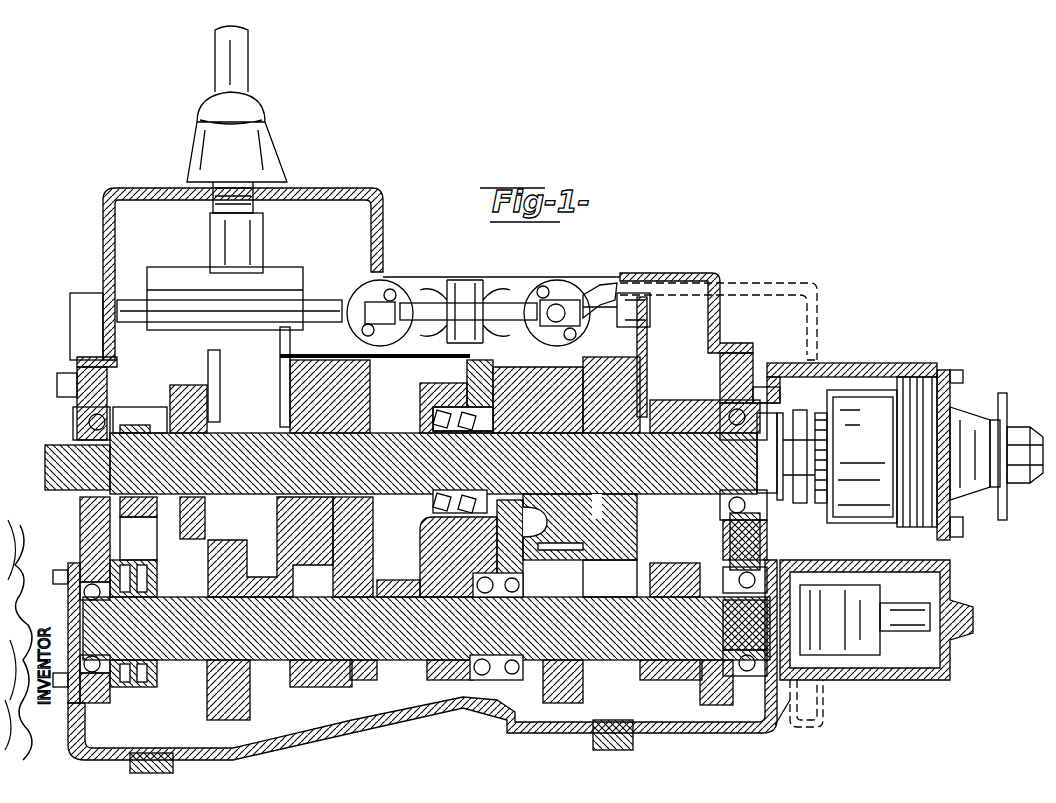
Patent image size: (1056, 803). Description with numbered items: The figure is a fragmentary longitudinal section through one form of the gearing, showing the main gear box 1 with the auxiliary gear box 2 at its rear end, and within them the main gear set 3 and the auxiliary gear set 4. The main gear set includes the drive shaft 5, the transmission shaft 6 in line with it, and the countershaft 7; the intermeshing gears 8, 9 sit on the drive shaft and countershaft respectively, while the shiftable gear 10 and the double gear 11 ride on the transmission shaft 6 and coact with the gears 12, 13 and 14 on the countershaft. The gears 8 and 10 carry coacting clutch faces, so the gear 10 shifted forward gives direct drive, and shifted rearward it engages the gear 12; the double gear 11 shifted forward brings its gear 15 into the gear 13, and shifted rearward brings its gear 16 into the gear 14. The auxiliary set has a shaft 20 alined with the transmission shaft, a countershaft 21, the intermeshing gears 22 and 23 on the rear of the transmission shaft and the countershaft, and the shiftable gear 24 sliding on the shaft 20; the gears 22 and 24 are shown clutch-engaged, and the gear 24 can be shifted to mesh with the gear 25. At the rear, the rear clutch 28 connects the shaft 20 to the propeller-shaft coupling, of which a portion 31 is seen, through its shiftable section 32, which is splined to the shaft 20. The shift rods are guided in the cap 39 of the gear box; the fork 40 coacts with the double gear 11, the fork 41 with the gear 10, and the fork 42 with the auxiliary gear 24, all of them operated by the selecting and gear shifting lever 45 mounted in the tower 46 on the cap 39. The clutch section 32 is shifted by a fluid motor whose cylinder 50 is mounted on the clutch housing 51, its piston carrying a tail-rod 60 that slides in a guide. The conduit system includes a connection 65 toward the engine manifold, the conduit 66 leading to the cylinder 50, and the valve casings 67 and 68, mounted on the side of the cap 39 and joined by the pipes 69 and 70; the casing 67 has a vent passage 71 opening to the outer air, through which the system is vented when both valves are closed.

The main gear box 1 is at (395, 735).
The auxiliary gear box 2 is at (660, 728).
The main gear set 3 is at (393, 524).
The auxiliary gear set 4 is at (666, 518).
The drive shaft 5 is at (45, 470).
The transmission shaft 6 is at (310, 268).
The countershaft 7 is at (315, 670).
The gear 8 is at (145, 407).
The gear 9 is at (158, 570).
The shiftable gear 10 is at (180, 380).
The double gear 11 is at (370, 377).
The gear 12 is at (218, 530).
The gear 13 is at (280, 548).
The gear 14 is at (405, 580).
The gear 15 is at (322, 360).
The gear 16 is at (373, 552).
The shaft 20 is at (665, 425).
The countershaft 21 is at (645, 582).
The gear 22 is at (545, 370).
The gear 23 is at (575, 682).
The shiftable gear 24 is at (640, 372).
The gear 25 is at (670, 560).
The rear clutch 28 is at (860, 385).
The portion of the coupling 31 is at (1010, 405).
The shiftable clutch section 32 is at (810, 400).
The cap 39 is at (110, 282).
The fork 40 is at (279, 390).
The fork 41 is at (232, 385).
The fork 42 is at (648, 345).
The selecting and gear shifting lever 45 is at (250, 62).
The tower 46 is at (275, 145).
The cylinder 50 is at (895, 680).
The housing 51 is at (930, 352).
The tail-rod 60 is at (915, 597).
The block 65 is at (640, 330).
The conduit 66 is at (625, 283).
The valve casing 67 is at (400, 285).
The valve casing 68 is at (600, 285).
The pipe 69 is at (520, 298).
The pipe 70 is at (470, 282).
The vent passage 71 is at (350, 280).